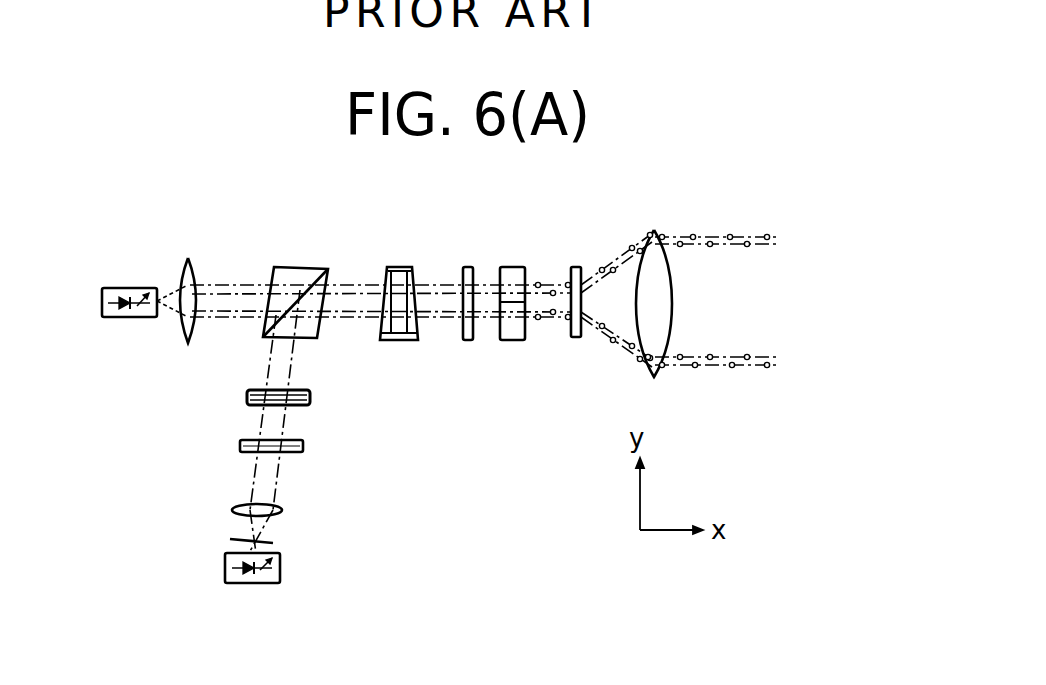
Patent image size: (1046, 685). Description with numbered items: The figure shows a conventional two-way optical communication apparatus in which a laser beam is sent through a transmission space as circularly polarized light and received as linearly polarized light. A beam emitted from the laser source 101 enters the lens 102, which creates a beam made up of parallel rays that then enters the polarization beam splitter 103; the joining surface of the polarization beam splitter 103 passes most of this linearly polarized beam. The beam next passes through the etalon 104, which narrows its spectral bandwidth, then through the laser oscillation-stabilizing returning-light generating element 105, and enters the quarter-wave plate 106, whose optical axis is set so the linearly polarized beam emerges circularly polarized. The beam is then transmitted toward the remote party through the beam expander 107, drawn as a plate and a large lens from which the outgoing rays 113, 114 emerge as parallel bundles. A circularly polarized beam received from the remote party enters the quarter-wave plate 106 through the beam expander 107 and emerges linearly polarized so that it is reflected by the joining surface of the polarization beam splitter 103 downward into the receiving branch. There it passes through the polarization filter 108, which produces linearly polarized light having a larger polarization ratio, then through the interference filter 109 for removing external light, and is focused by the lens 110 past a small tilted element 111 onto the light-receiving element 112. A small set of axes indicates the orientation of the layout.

The laser source 101 is at (128, 288).
The lens 102 is at (190, 258).
The polarization beam splitter 103 is at (298, 267).
The etalon 104 is at (400, 267).
The laser oscillation-stabilizing returning-light generating element 105 is at (472, 267).
The quarter-wave plate 106 is at (522, 267).
The beam expander 107 is at (663, 218).
The polarization filter 108 is at (310, 395).
The interference filter 109 is at (303, 446).
The lens 110 is at (283, 508).
The plate 111 is at (273, 542).
The light-receiving element 112 is at (280, 575).
The light beam 113 is at (675, 233).
The light beam 114 is at (720, 355).